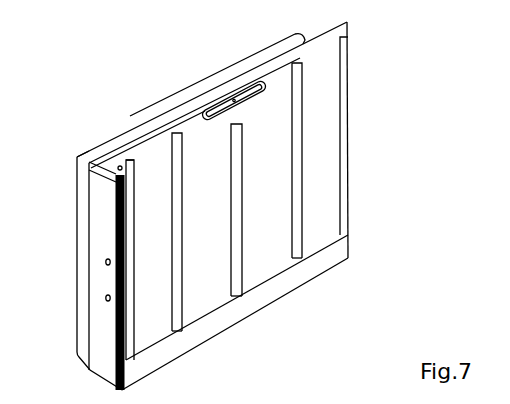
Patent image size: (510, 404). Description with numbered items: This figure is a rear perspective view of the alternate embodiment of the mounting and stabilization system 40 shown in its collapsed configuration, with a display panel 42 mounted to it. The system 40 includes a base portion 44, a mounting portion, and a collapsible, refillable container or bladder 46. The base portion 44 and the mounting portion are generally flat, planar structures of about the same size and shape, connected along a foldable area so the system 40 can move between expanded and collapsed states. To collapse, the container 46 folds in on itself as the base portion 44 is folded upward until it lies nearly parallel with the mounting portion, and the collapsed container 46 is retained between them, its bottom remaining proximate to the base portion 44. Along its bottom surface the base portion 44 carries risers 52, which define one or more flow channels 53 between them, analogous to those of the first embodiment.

The mounting and stabilization system 40 is at (136, 81).
The display panel 42 is at (93, 330).
The base portion 44 is at (272, 277).
The collapsible, refillable container or bladder 46 is at (118, 215).
The risers 52 is at (345, 209).
The flow channels 53 is at (327, 67).